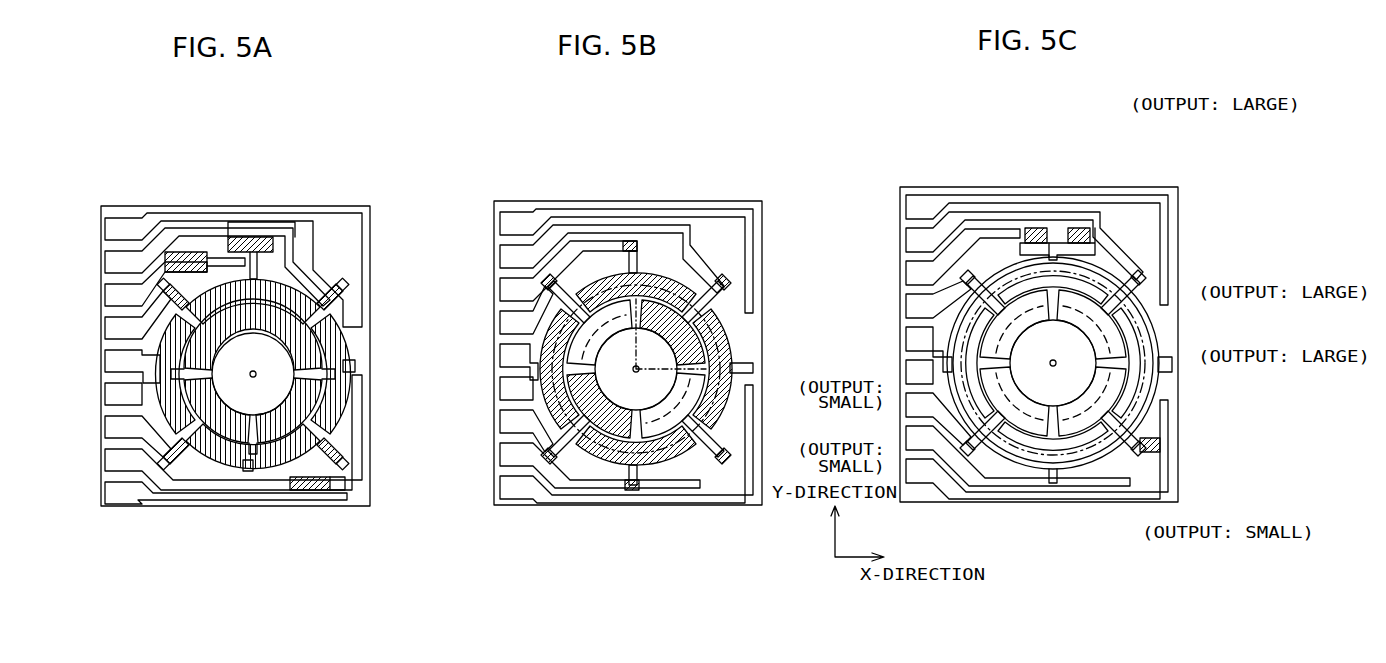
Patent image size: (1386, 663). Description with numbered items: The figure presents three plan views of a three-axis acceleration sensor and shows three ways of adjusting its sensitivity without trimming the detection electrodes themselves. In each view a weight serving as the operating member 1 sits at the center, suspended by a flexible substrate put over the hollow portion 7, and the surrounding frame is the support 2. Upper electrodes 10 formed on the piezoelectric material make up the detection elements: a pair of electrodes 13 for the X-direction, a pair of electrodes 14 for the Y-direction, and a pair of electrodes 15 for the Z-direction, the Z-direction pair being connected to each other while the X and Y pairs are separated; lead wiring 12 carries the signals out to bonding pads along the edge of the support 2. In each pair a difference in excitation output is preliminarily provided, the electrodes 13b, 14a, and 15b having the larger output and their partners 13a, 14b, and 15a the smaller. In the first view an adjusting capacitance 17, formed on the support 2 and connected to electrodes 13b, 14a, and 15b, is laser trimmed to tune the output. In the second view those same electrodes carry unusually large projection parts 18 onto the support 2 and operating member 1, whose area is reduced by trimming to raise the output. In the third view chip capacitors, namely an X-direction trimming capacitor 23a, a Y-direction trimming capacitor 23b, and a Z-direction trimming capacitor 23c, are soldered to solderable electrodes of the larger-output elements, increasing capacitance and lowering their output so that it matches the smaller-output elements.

In FIG. 5A, the operating member 1 is at (247, 390).
In FIG. 5B, the operating member 1 is at (618, 385).
In FIG. 5A, the support 2 is at (370, 230).
In FIG. 5B, the support 2 is at (582, 201).
In FIG. 5A, the hollow portion 7 is at (197, 433).
In FIG. 5B, the hollow portion 7 is at (620, 433).
In FIG. 5A, the upper electrodes 10 is at (249, 359).
In FIG. 5B, the upper electrodes 10 is at (634, 357).
In FIG. 5C, the upper electrodes 10 is at (1045, 341).
In FIG. 5A, the lead wiring 12 is at (113, 295).
In FIG. 5B, the lead wiring 12 is at (512, 252).
In FIG. 5C, the lead wiring 12 is at (1039, 347).
In FIG. 5C, the electrodes corresponding to the X-direction 13 is at (970, 355).
In FIG. 5A, the X-direction electrode 13a is at (160, 347).
In FIG. 5B, the X-direction electrode 13a is at (553, 352).
In FIG. 5A, the X-direction electrode 13b is at (330, 350).
In FIG. 5B, the X-direction electrode 13b is at (727, 353).
In FIG. 5C, the electrodes corresponding to the Y-direction 14 is at (1070, 280).
In FIG. 5A, the Y-direction electrode 14a is at (257, 278).
In FIG. 5B, the Y-direction electrode 14a is at (640, 330).
In FIG. 5A, the Y-direction electrode 14b is at (253, 450).
In FIG. 5B, the Y-direction electrode 14b is at (642, 465).
In FIG. 5C, the electrodes corresponding to the Z-direction 15 is at (985, 400).
In FIG. 5A, the Z-direction electrode 15a is at (180, 403).
In FIG. 5B, the Z-direction electrode 15a is at (597, 400).
In FIG. 5A, the Z-direction electrode 15b is at (297, 328).
In FIG. 5B, the Z-direction electrode 15b is at (715, 310).
In FIG. 5A, the adjusting capacitance 17 is at (237, 237).
In FIG. 5B, the projection parts 18 is at (647, 350).
In FIG. 5C, the X-direction trimming capacitor 23a is at (1160, 445).
In FIG. 5C, the Y-direction trimming capacitor 23b is at (1036, 228).
In FIG. 5C, the Z-direction trimming capacitor 23c is at (1078, 228).